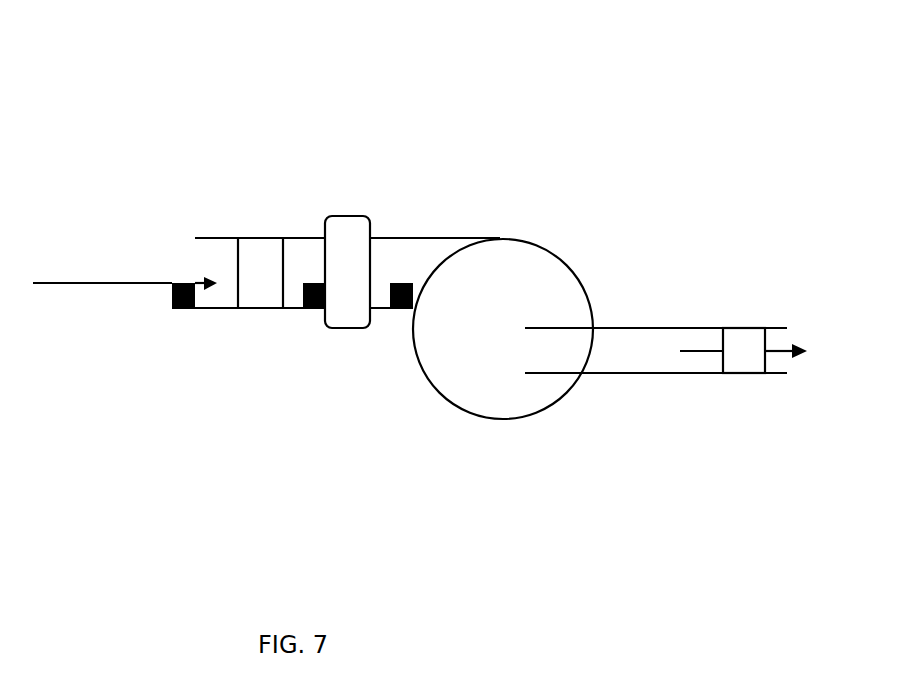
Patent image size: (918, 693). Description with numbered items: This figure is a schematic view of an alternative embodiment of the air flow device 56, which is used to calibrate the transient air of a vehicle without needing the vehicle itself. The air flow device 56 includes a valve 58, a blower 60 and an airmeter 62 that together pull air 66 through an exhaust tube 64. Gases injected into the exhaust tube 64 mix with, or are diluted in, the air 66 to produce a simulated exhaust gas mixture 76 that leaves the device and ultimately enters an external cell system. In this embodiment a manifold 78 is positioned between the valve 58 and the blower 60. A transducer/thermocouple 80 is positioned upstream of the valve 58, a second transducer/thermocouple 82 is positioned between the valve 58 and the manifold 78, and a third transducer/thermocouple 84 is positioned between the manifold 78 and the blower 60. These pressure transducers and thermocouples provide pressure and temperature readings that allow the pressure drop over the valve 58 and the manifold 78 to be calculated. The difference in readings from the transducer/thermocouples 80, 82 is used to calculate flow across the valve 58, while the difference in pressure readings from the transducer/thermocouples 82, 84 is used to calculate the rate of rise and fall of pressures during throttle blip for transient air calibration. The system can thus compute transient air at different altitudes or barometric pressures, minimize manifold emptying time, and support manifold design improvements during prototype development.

The air flow device 56 is at (138, 119).
The valve 58 is at (260, 238).
The blower 60 is at (543, 245).
The airmeter 62 is at (735, 328).
The exhaust tube 64 is at (652, 372).
The air 66 is at (132, 283).
The simulated exhaust gas mixture 76 is at (790, 358).
The manifold 78 is at (345, 216).
The transducer/thermocouple 80 is at (182, 308).
The second transducer/thermocouple 82 is at (315, 308).
The third transducer/thermocouple 84 is at (402, 308).